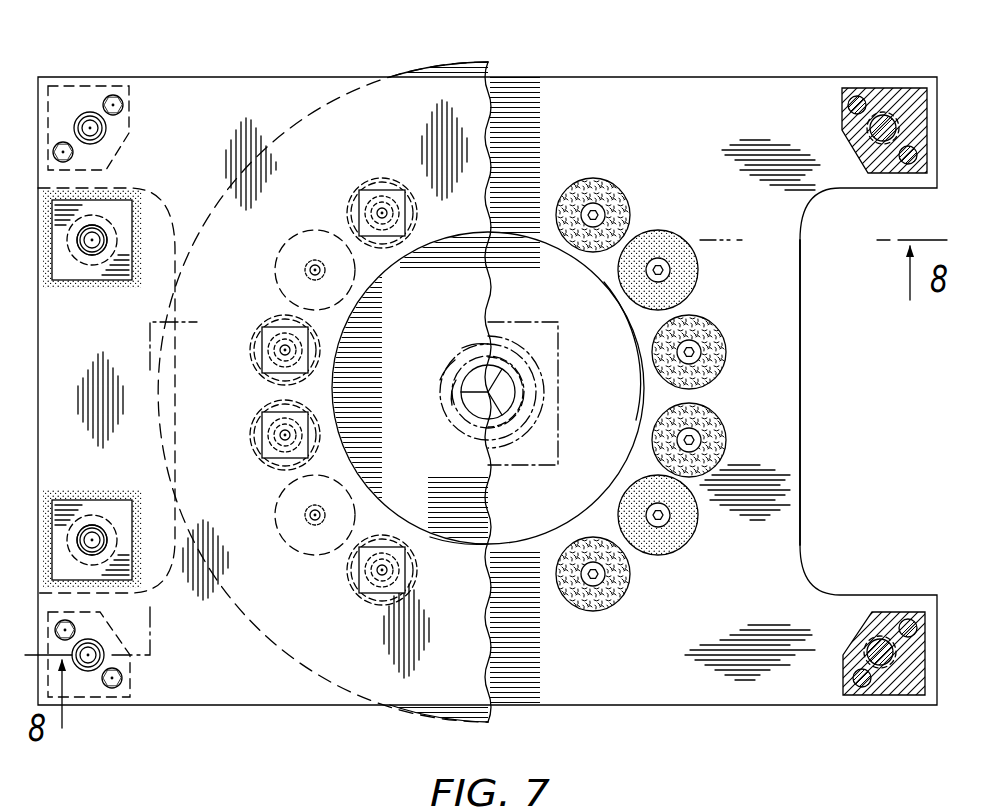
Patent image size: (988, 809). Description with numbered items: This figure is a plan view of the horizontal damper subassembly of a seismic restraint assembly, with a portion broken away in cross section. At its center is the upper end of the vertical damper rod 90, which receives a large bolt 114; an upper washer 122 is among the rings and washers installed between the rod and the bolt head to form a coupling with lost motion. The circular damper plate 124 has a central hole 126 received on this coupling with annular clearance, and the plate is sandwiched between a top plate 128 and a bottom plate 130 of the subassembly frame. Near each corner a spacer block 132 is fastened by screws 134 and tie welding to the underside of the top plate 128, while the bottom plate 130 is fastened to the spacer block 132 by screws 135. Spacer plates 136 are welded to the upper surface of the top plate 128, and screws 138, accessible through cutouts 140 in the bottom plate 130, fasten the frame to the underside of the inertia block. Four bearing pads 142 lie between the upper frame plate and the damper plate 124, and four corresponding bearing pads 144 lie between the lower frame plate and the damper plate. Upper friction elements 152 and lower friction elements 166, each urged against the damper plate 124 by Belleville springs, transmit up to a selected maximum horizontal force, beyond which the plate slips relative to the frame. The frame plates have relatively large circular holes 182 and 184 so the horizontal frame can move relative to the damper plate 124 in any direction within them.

The vertical damper rod 90 is at (558, 437).
The large bolt 114 is at (462, 348).
The upper washer 122 is at (440, 380).
The circular damper plate 124 is at (487, 388).
The central hole 126 is at (447, 414).
The top plate 128 is at (487, 392).
The bottom plate 130 is at (744, 432).
The spacer block 132 is at (138, 103).
The screws 134 is at (72, 158).
The screws 135 is at (86, 114).
The spacer plates 136 is at (125, 213).
The screws 138 is at (92, 250).
The cutouts 140 is at (848, 440).
The bearing pads 142 is at (315, 232).
The bearing pads 144 is at (672, 255).
The upper friction element 152 is at (382, 189).
The lower friction elements 166 is at (598, 177).
The circular hole 182 is at (438, 540).
The circular hole 184 is at (604, 282).